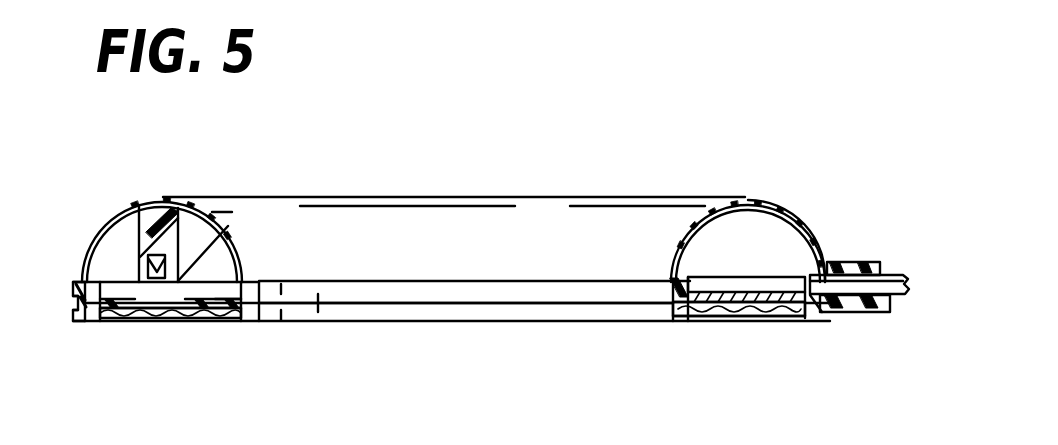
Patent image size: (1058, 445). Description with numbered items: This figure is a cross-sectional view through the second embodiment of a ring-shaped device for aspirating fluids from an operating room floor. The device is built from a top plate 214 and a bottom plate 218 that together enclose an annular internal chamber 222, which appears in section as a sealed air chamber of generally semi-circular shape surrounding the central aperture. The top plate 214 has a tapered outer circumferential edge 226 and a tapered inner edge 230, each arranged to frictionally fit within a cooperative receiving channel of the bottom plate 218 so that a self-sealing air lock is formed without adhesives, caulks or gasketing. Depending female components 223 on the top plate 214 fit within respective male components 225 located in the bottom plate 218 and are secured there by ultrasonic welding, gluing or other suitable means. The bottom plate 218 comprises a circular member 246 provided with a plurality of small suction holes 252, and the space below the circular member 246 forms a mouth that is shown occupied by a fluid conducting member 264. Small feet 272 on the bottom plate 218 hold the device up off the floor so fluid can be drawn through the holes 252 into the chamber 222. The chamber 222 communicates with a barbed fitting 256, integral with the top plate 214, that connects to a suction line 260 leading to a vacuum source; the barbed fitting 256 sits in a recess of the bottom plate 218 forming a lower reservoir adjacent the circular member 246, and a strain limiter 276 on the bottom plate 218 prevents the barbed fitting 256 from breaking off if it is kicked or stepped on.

The top plate 214 is at (103, 212).
The bottom plate 218 is at (554, 295).
The annular internal chamber 222 is at (805, 222).
The female components 223 is at (165, 212).
The male components 225 is at (232, 216).
The outer circumferential edge 226 is at (95, 325).
The inner edge 230 is at (258, 283).
The circular member 246 is at (700, 318).
The small suction holes 252 is at (190, 322).
The barbed fitting 256 is at (845, 265).
The suction line 260 is at (905, 268).
The fluid conducting member 264 is at (230, 322).
The feet 272 is at (822, 318).
The strain limiter 276 is at (878, 318).